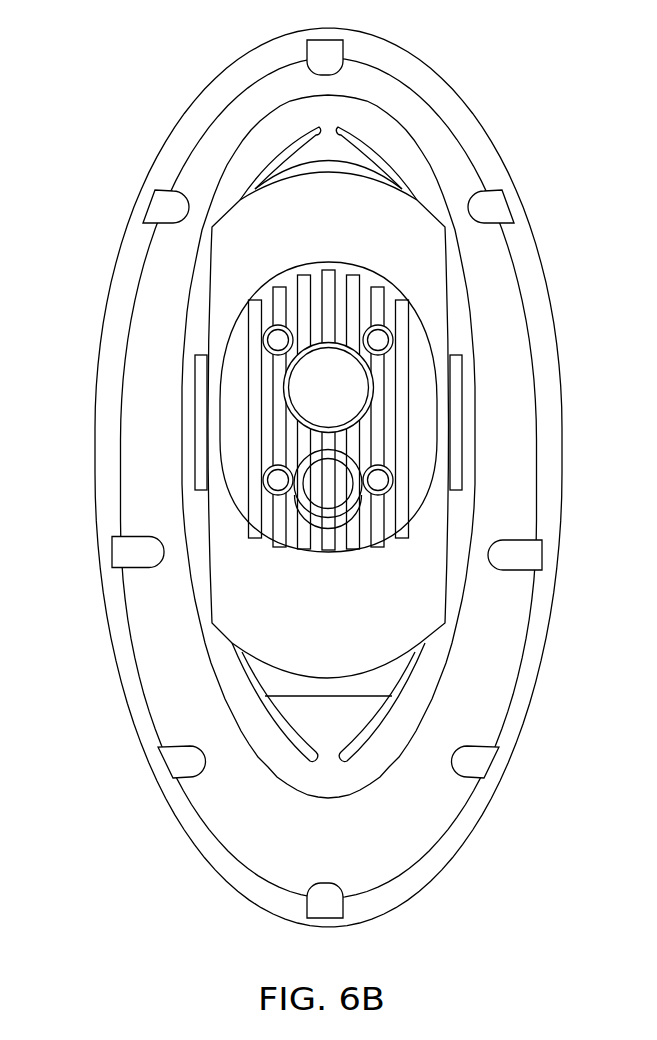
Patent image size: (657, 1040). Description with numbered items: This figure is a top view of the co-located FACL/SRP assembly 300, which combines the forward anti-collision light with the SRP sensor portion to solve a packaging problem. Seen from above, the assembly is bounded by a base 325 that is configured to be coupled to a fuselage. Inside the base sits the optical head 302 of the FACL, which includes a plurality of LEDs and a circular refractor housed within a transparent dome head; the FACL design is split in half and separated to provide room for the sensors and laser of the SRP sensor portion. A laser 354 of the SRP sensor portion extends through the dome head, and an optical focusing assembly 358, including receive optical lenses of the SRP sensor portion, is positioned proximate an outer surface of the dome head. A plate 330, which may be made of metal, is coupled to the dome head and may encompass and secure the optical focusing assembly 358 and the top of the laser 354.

The co-located FACL/SRP assembly 300 is at (520, 93).
The optical head 302 is at (247, 248).
The base 325 is at (527, 280).
The plate 330 is at (250, 433).
The laser 354 is at (357, 508).
The optical focusing assembly 358 is at (350, 383).